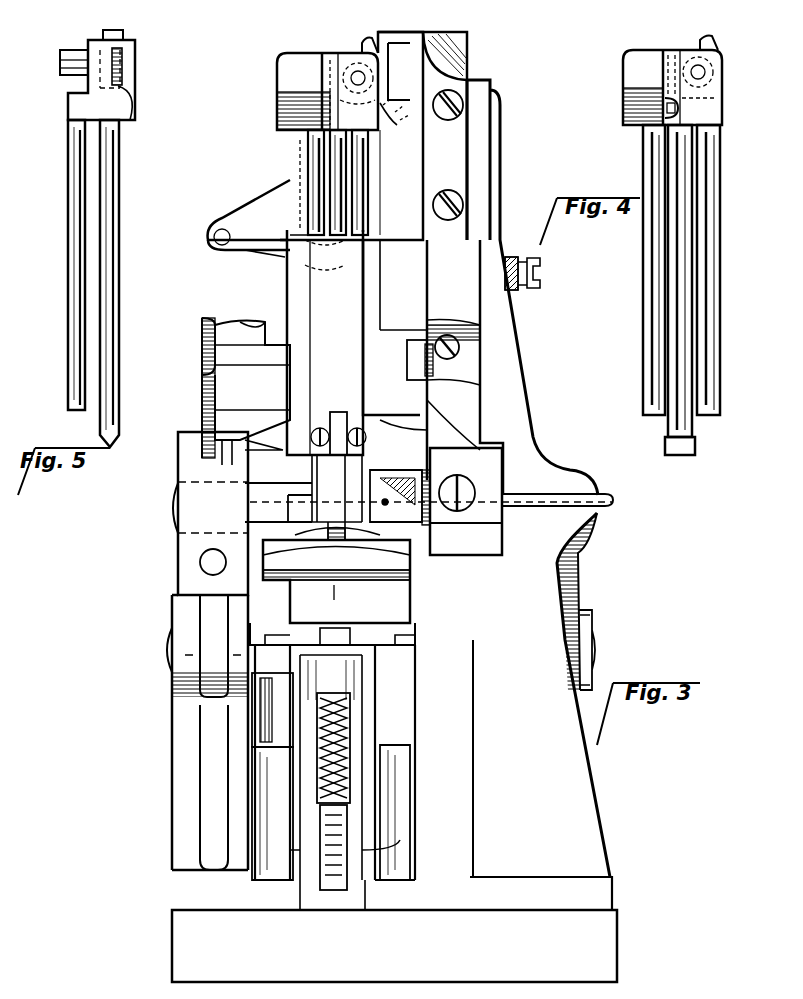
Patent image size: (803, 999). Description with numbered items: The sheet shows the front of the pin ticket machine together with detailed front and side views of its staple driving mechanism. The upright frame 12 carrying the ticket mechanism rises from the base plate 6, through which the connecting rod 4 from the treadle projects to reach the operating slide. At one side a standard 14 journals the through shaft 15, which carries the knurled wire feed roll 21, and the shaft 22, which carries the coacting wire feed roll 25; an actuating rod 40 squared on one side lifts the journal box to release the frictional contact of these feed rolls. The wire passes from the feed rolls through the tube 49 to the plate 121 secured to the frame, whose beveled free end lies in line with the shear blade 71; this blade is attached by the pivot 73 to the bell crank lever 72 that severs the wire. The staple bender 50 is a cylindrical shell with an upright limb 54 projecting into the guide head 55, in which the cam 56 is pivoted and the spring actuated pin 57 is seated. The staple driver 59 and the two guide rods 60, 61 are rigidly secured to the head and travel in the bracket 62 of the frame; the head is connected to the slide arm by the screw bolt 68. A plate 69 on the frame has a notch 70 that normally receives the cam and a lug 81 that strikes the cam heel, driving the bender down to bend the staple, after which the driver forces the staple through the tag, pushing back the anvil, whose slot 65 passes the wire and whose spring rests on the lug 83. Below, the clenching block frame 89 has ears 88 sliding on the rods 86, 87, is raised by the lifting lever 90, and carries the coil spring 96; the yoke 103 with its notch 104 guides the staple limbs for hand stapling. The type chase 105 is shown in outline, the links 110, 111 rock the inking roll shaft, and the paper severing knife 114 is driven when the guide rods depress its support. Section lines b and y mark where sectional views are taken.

In FIG. 3, the connecting rod 4 is at (383, 32).
In FIG. 3, the base plate 6 is at (394, 926).
In FIG. 3, the upright frame 12 is at (485, 166).
In FIG. 3, the standard 14 is at (175, 570).
In FIG. 3, the through shaft 15 is at (166, 650).
In FIG. 3, the wire feed roll 21 is at (590, 604).
In FIG. 3, the shaft 22 is at (170, 508).
In FIG. 3, the coacting wire feed roll 25 is at (580, 576).
In FIG. 3, the actuating rod 40 is at (200, 556).
In FIG. 3, the tube 49 is at (612, 502).
In FIG. 3, the staple bender 50 is at (292, 512).
In FIG. 3, the upright limb 54 is at (300, 138).
In FIG. 5, the guide head 55 is at (110, 103).
In FIG. 4, the guide head 55 is at (638, 60).
In FIG. 3, the guide head 55 is at (293, 73).
In FIG. 5, the cam 56 is at (120, 40).
In FIG. 4, the cam 56 is at (712, 46).
In FIG. 3, the cam 56 is at (362, 45).
In FIG. 4, the spring actuated pin 57 is at (678, 108).
In FIG. 3, the spring actuated pin 57 is at (225, 432).
In FIG. 5, the staple driver 59 is at (112, 182).
In FIG. 4, the staple driver 59 is at (683, 230).
In FIG. 3, the staple driver 59 is at (346, 168).
In FIG. 5, the guide rod 60 is at (73, 168).
In FIG. 4, the guide rod 60 is at (650, 296).
In FIG. 3, the guide rod 60 is at (308, 160).
In FIG. 4, the guide rod 61 is at (712, 318).
In FIG. 3, the guide rod 61 is at (366, 190).
In FIG. 3, the bracket 62 is at (287, 284).
In FIG. 3, the slot 65 is at (335, 478).
In FIG. 5, the screw bolt 68 is at (66, 76).
In FIG. 3, the plate 69 is at (432, 72).
In FIG. 3, the notch 70 is at (432, 72).
In FIG. 3, the shear blade 71 is at (410, 430).
In FIG. 3, the bell crank lever 72 is at (450, 356).
In FIG. 3, the pivot 73 is at (432, 372).
In FIG. 3, the lug 81 is at (403, 119).
In FIG. 3, the lug 83 is at (334, 430).
In FIG. 3, the rod 86 is at (268, 710).
In FIG. 3, the rod 87 is at (403, 716).
In FIG. 3, the ears 88 is at (262, 775).
In FIG. 3, the clenching block frame 89 is at (338, 682).
In FIG. 3, the lifting lever 90 is at (340, 866).
In FIG. 3, the coil spring 96 is at (342, 752).
In FIG. 3, the yoke 103 is at (384, 636).
In FIG. 3, the notch 104 is at (345, 634).
In FIG. 3, the type chase 105 is at (215, 388).
In FIG. 3, the link 110 is at (265, 255).
In FIG. 3, the link 111 is at (270, 196).
In FIG. 3, the paper severing knife 114 is at (330, 528).
In FIG. 3, the plate 121 is at (490, 482).
In FIG. 3, the section line b is at (335, 601).
In FIG. 3, the section line y is at (360, 50).